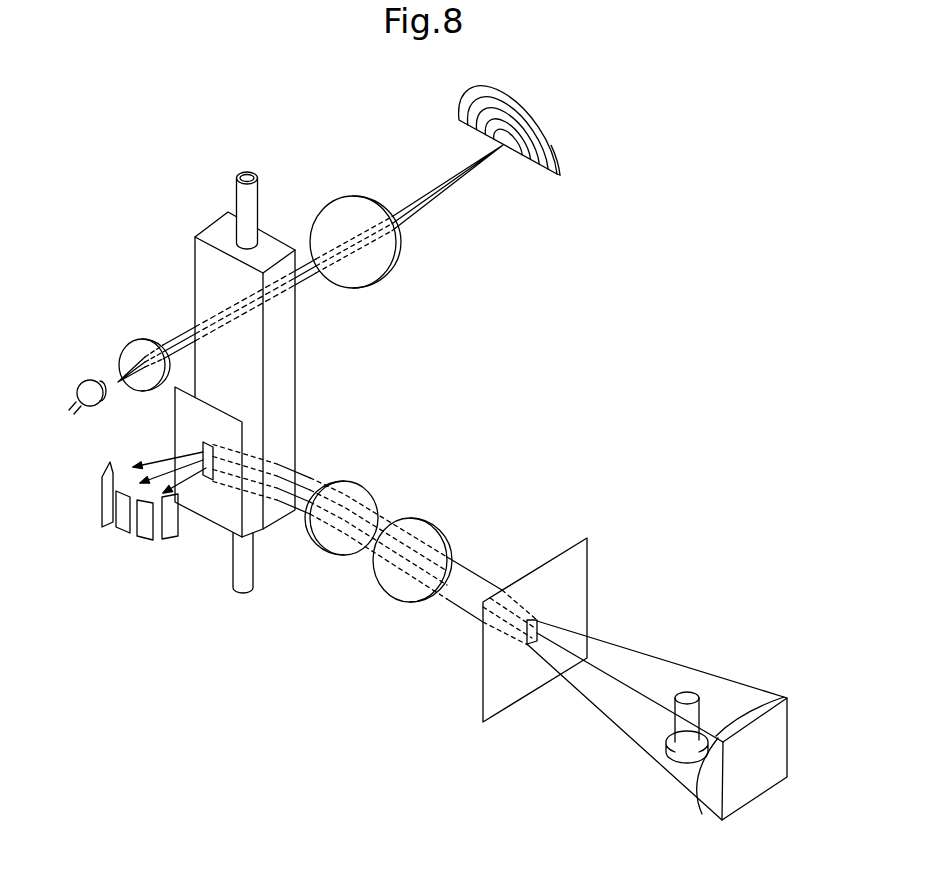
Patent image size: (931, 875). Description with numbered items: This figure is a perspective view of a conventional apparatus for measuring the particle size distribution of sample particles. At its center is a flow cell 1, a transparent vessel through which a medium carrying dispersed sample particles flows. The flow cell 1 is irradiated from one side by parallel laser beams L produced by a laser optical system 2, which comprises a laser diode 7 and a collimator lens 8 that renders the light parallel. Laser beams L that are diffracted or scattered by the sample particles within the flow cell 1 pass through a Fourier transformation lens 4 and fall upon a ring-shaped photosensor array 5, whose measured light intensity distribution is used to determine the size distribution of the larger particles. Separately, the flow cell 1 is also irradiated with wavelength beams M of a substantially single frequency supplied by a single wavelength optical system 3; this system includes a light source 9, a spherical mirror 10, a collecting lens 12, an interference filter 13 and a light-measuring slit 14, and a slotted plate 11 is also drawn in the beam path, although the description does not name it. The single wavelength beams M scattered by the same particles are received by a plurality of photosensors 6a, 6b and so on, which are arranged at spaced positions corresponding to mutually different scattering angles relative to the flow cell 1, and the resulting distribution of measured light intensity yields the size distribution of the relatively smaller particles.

The flow cell 1 is at (295, 375).
The laser optical system 2 is at (147, 315).
The single wavelength optical system 3 is at (505, 538).
The Fourier transformation lens 4 is at (397, 258).
The ring-shaped photosensor array 5 is at (558, 138).
The photosensor 6a is at (110, 462).
The photosensor 6b is at (110, 497).
The laser diode 7 is at (83, 380).
The collimator lens 8 is at (127, 342).
The light source 9 is at (690, 695).
The spherical mirror 10 is at (787, 737).
The slit plate 11 is at (587, 585).
The collecting lens 12 is at (440, 528).
The interference filter 13 is at (360, 482).
The light-measuring slit 14 is at (212, 521).
The parallel laser beams L is at (182, 327).
The wavelength beams M is at (297, 513).